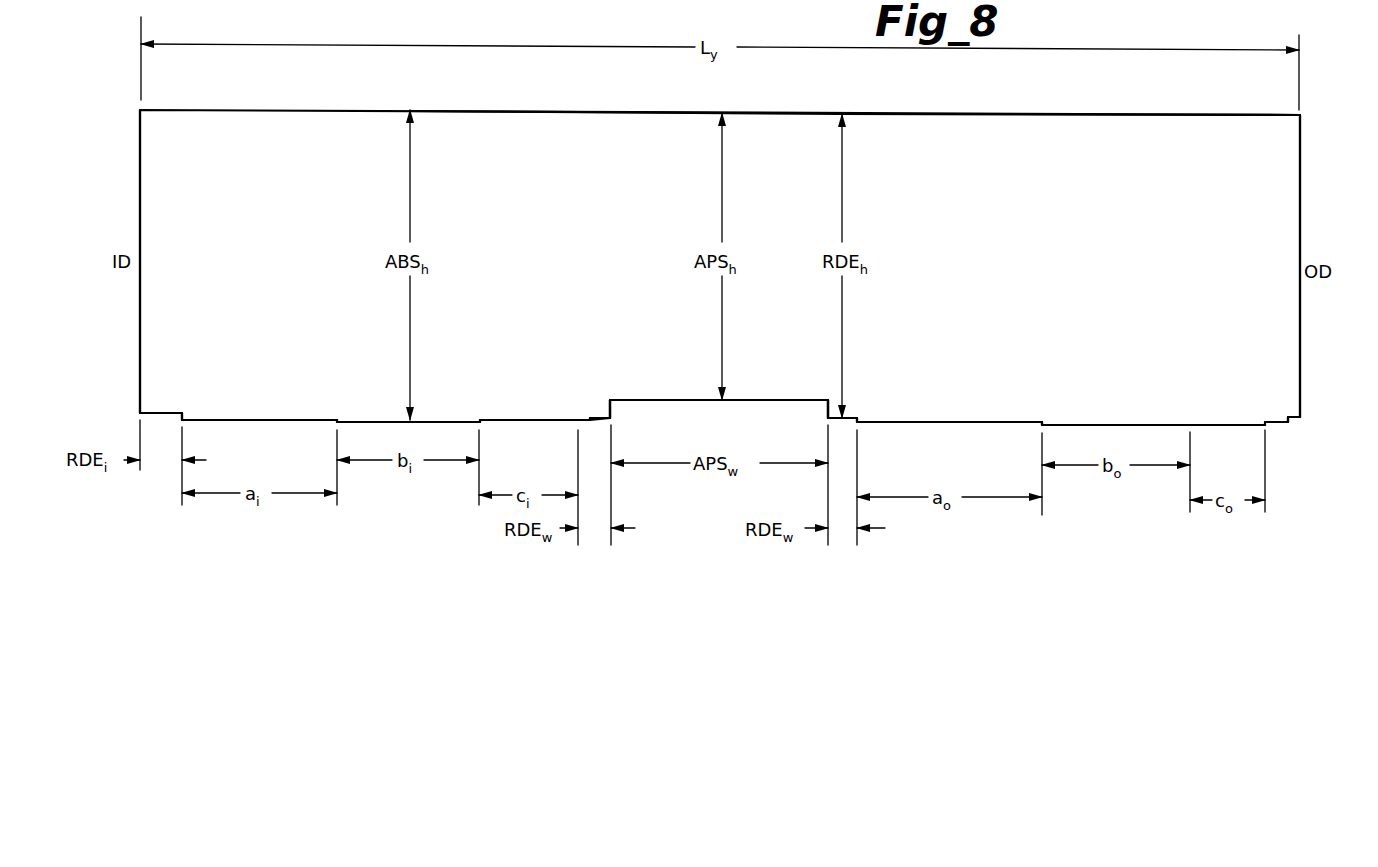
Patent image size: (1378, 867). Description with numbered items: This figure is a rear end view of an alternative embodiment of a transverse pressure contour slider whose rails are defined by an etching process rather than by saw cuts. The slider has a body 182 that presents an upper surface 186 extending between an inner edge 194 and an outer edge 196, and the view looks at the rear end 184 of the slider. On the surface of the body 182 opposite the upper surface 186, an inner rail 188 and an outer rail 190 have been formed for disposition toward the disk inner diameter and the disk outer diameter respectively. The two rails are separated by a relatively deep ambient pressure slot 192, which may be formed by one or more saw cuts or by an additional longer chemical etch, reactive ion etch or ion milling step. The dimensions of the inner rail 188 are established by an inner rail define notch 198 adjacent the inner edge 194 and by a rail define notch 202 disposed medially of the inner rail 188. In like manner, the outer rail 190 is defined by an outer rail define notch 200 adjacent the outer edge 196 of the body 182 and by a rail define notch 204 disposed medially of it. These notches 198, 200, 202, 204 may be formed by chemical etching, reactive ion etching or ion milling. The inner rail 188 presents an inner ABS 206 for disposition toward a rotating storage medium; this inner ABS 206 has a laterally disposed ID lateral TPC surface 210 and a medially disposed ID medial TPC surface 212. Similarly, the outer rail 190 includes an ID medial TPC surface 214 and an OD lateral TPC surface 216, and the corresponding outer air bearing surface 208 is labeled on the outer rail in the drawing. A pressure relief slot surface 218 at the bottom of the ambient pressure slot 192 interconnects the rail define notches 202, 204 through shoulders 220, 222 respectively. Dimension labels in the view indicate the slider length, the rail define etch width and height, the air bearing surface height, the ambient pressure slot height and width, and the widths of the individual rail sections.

The body 182 is at (1182, 115).
The rear end 184 is at (1278, 332).
The upper surface 186 is at (624, 113).
The inner rail 188 is at (385, 500).
The outer rail 190 is at (1075, 505).
The ambient pressure slot 192 is at (712, 515).
The inner edge 194 is at (138, 213).
The outer edge 196 is at (1302, 212).
The inner rail define notch 198 is at (170, 416).
The outer rail define notch 200 is at (1288, 420).
The rail define notch 202 is at (595, 422).
The rail define notch 204 is at (856, 435).
The inner ABS 206 is at (384, 427).
The outer rail air bearing surface 208 is at (1148, 430).
The ID lateral TPC surface 210 is at (258, 421).
The ID medial TPC surface 212 is at (530, 433).
The ID medial TPC surface 214 is at (948, 423).
The OD lateral TPC surface 216 is at (1244, 429).
The pressure relief slot surface 218 is at (742, 403).
The shoulder 220 is at (616, 400).
The shoulder 222 is at (812, 405).